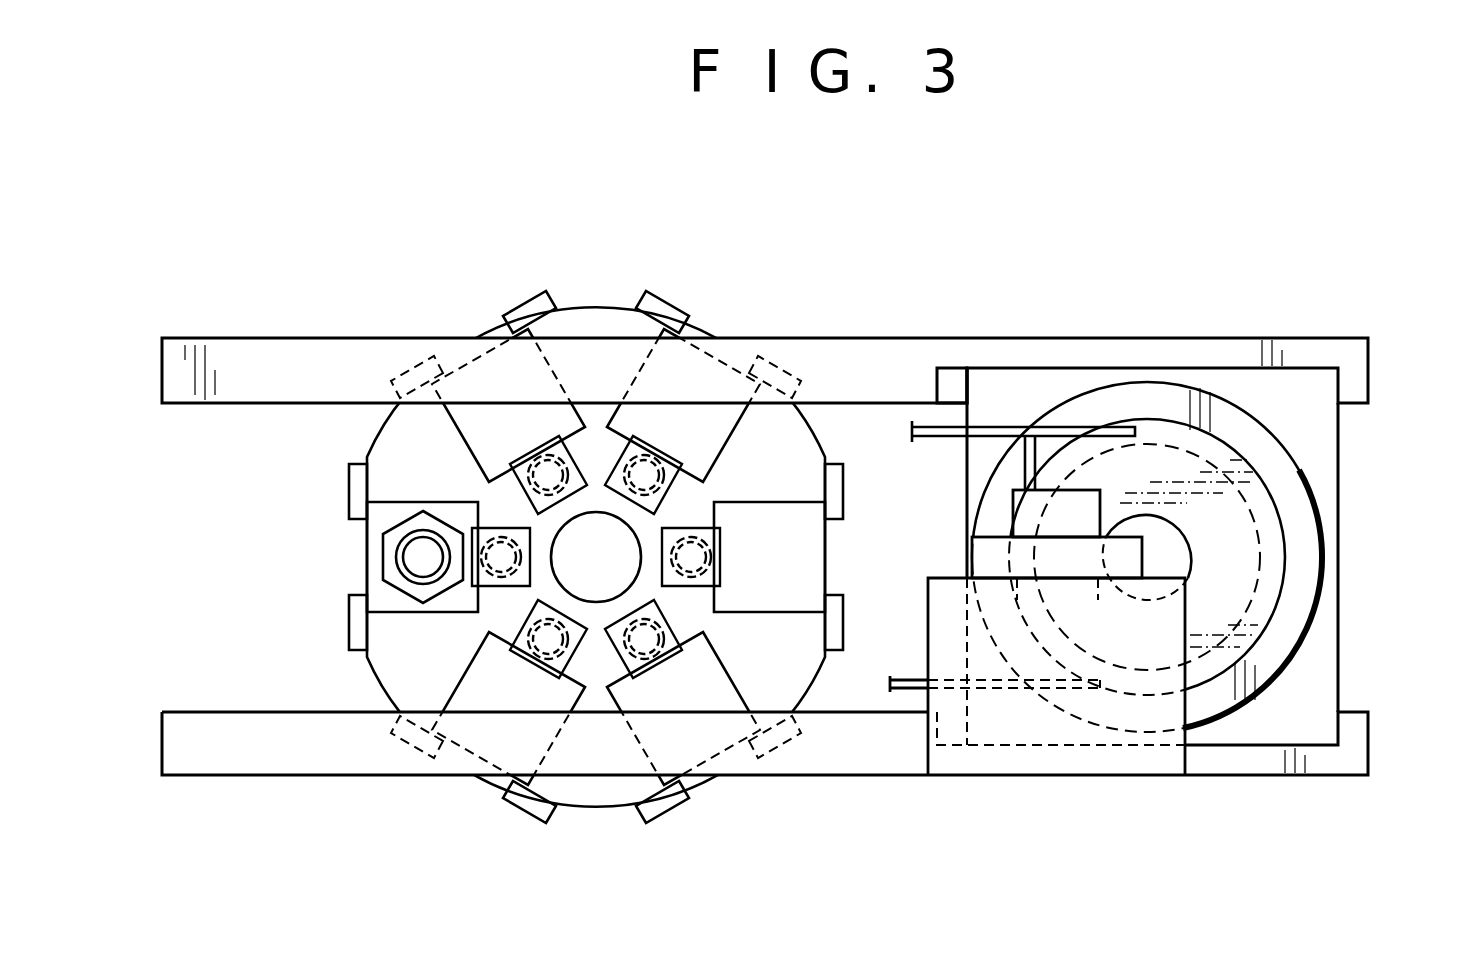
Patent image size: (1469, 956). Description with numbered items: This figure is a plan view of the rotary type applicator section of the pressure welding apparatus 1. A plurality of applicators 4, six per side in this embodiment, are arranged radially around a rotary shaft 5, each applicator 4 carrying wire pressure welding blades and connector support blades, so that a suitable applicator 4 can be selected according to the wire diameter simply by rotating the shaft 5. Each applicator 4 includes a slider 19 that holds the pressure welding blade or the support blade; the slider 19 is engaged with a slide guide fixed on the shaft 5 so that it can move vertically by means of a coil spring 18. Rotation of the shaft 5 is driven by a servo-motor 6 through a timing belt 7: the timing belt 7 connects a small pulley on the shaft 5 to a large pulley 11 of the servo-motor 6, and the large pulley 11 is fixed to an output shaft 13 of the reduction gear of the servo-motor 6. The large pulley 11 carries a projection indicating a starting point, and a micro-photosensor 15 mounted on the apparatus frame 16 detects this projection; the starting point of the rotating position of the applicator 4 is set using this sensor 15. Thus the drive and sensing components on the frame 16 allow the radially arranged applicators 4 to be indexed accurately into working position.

The pressure welding apparatus 1 is at (1105, 280).
The applicator 4 is at (450, 352).
The rotary shaft 5 is at (608, 535).
The servo-motor 6 is at (1275, 590).
The timing belt 7 is at (1003, 428).
The large pulley 11 is at (1273, 487).
The output shaft 13 is at (1187, 542).
The micro-photosensor 15 is at (1027, 535).
The apparatus frame 16 is at (1280, 778).
The coil spring 18 is at (668, 620).
The slider 19 is at (448, 515).